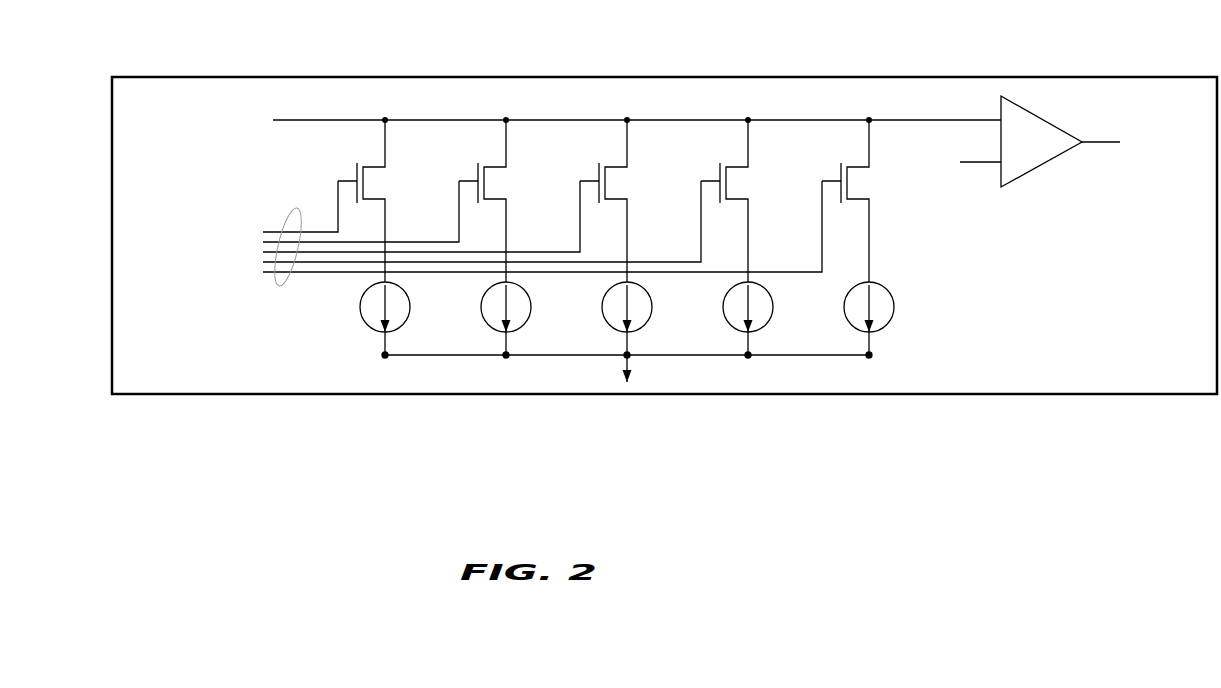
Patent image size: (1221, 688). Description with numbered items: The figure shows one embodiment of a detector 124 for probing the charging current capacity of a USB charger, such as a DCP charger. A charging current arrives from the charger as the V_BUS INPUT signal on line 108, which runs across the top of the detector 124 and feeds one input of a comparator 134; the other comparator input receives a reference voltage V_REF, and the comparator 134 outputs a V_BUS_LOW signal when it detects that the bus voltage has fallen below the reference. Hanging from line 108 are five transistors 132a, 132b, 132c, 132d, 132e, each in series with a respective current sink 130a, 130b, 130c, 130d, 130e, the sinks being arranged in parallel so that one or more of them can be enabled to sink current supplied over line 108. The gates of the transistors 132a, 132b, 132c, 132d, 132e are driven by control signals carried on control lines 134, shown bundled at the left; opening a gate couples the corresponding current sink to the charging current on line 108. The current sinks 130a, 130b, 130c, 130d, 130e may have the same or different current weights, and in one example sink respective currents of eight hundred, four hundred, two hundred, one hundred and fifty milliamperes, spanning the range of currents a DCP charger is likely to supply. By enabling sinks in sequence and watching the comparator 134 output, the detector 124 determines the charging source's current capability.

The line 108 is at (285, 120).
The detector 124 is at (243, 395).
The current sink 130a is at (373, 330).
The current sink 130b is at (494, 330).
The current sink 130c is at (615, 330).
The current sink 130d is at (736, 330).
The current sink 130e is at (857, 330).
The transistor 132a is at (361, 148).
The transistor 132b is at (482, 148).
The transistor 132c is at (603, 148).
The transistor 132d is at (724, 148).
The transistor 132e is at (845, 148).
The comparator 134 is at (277, 285).